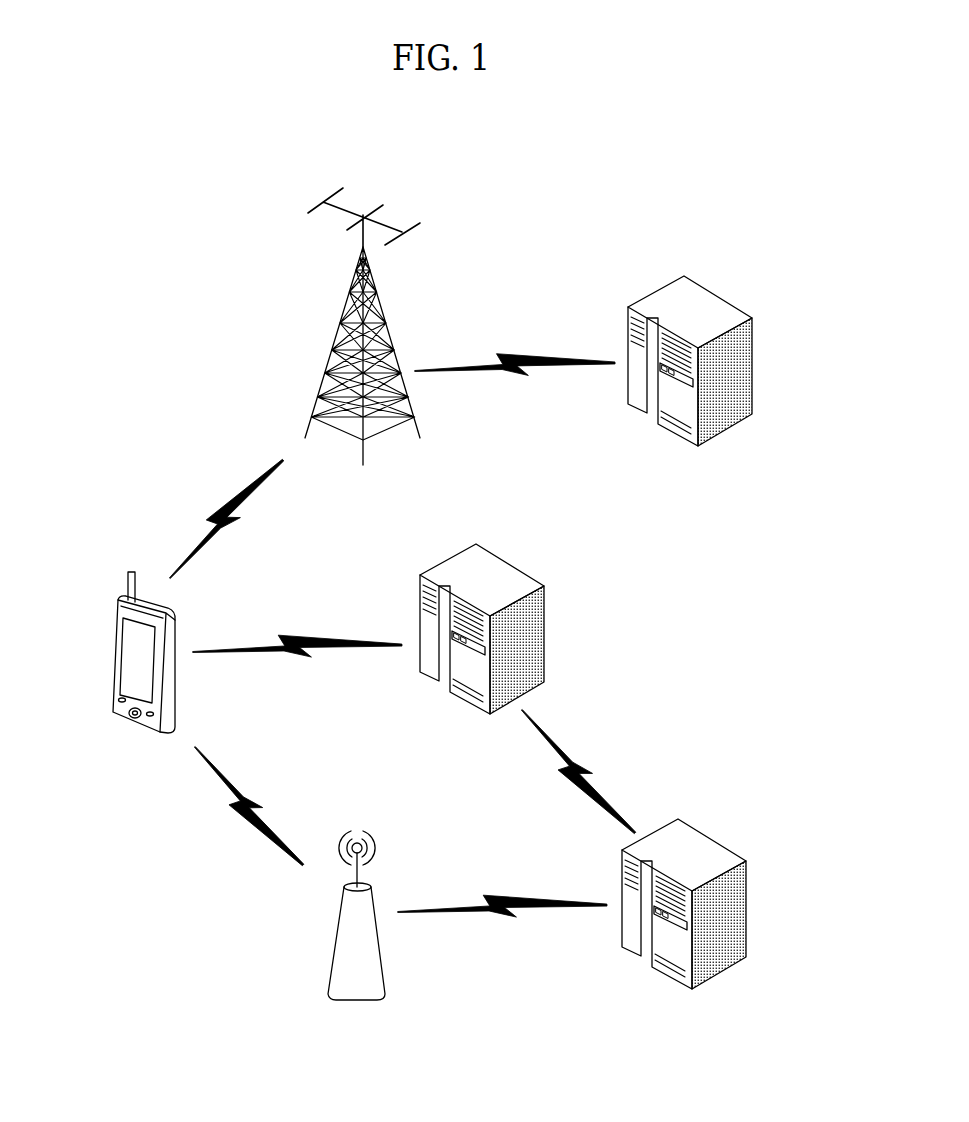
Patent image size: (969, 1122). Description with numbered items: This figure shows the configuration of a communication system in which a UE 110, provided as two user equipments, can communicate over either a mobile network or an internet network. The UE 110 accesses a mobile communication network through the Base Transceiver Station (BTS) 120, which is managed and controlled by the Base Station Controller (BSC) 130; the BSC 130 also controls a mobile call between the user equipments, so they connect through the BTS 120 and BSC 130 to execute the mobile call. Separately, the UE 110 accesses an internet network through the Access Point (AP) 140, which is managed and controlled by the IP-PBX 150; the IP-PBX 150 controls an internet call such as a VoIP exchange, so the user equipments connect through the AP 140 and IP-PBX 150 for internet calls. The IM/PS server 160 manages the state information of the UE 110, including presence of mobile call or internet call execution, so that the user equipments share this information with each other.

The UE 110 is at (125, 720).
The Base Transceiver Station (BTS) 120 is at (345, 302).
The Base Station Controller (BSC) 130 is at (730, 372).
The Access Point (AP) 140 is at (345, 945).
The internet Protocol Private Branch eXchange (IP-PBX) 150 is at (723, 913).
The IM/PS server 160 is at (528, 640).